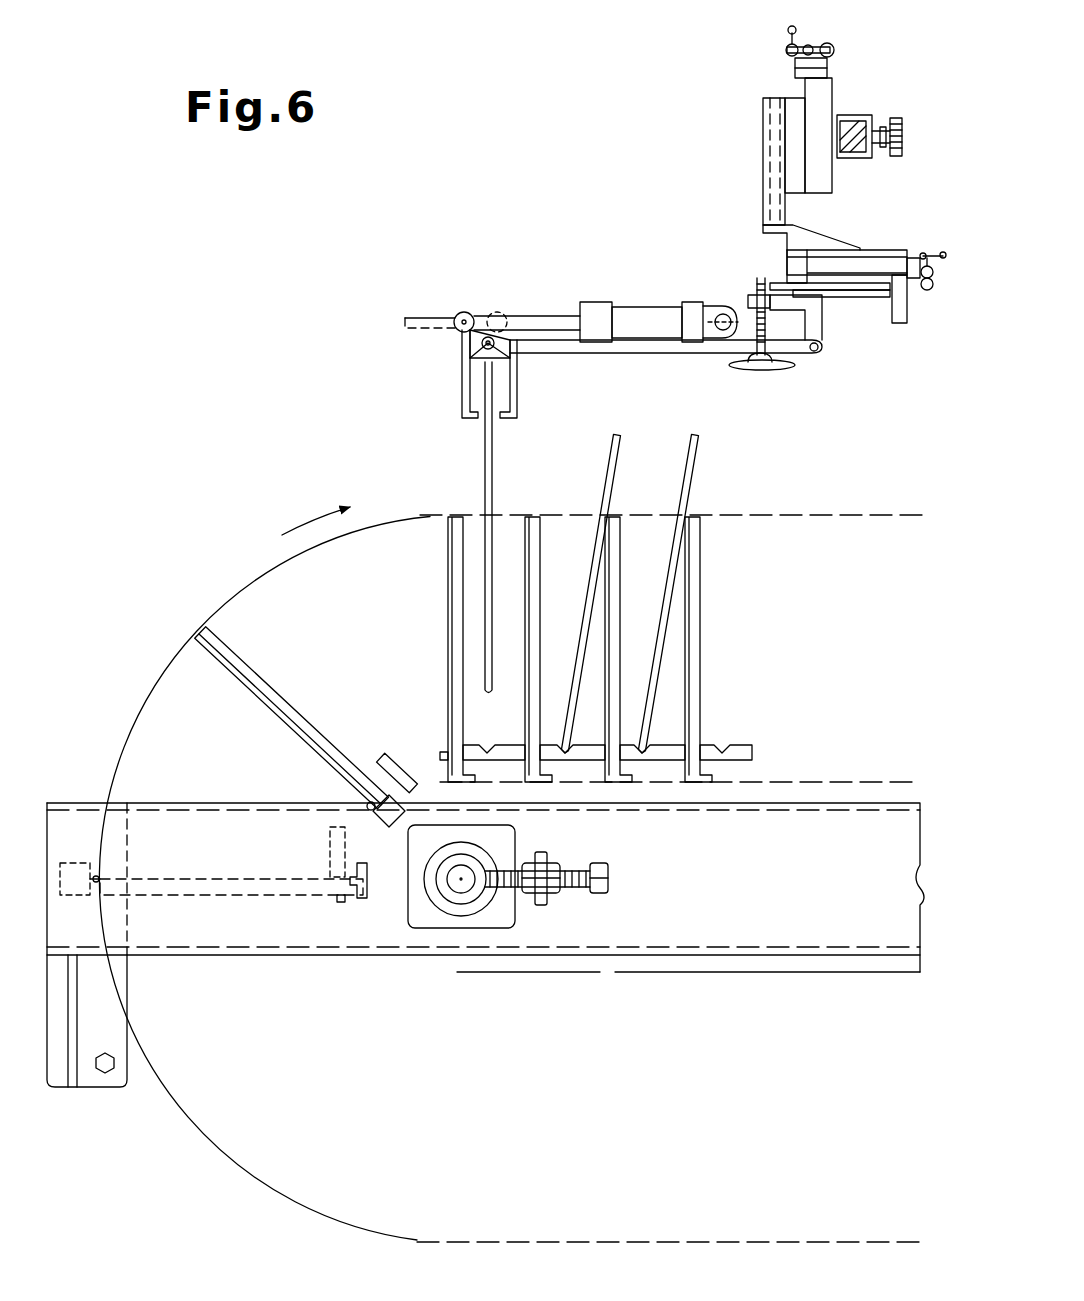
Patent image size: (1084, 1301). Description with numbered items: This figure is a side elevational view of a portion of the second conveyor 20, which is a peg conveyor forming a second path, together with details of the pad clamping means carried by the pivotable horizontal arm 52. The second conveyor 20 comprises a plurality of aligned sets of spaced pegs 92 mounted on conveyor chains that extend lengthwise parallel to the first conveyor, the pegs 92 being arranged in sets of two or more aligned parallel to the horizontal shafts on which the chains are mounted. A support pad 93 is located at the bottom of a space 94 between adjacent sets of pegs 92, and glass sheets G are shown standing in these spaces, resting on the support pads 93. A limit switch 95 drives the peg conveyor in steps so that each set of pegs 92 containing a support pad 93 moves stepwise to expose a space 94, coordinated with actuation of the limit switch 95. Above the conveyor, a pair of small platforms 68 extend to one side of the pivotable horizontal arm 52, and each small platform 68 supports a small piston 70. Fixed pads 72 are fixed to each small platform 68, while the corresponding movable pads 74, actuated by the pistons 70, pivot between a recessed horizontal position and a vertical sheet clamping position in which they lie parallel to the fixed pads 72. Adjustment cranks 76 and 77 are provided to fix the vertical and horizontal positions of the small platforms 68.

The second conveyor 20 is at (200, 684).
The pivotable horizontal arm 52 is at (850, 124).
The small platforms 68 is at (600, 352).
The small piston 70 is at (653, 312).
The fixed pads 72 is at (510, 422).
The movable pads 74 is at (432, 318).
The adjustment crank 76 is at (808, 46).
The adjustment crank 77 is at (936, 232).
The pegs 92 is at (458, 527).
The support pad 93 is at (397, 760).
The space 94 is at (668, 440).
The limit switch 95 is at (75, 862).
The glass sheet G is at (484, 460).